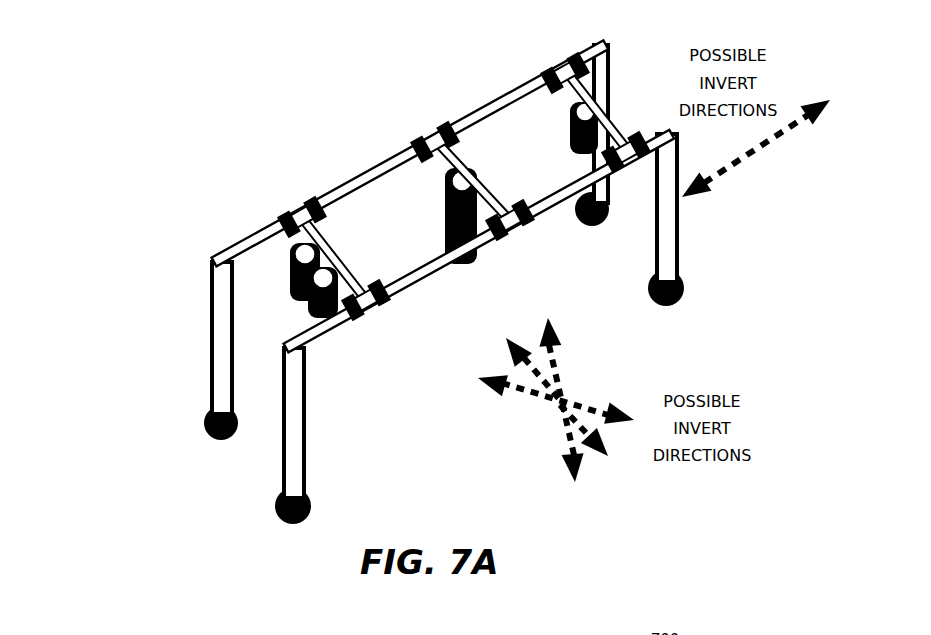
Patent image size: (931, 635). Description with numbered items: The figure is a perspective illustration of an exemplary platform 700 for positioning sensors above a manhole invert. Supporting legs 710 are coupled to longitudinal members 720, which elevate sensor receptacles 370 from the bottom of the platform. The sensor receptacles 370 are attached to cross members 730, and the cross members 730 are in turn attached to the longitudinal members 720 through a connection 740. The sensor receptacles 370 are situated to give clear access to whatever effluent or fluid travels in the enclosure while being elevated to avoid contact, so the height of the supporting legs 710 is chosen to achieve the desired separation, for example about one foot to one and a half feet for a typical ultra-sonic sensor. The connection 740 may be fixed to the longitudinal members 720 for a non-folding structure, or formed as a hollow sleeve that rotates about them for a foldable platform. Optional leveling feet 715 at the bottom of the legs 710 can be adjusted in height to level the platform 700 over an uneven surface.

The exemplary platform 700 is at (112, 52).
The sensor receptacles 370 is at (600, 98).
The supporting legs 710 is at (213, 309).
The leveling feet 715 is at (207, 434).
The longitudinal members 720 is at (358, 190).
The cross members 730 is at (400, 283).
The connection 740 is at (548, 70).